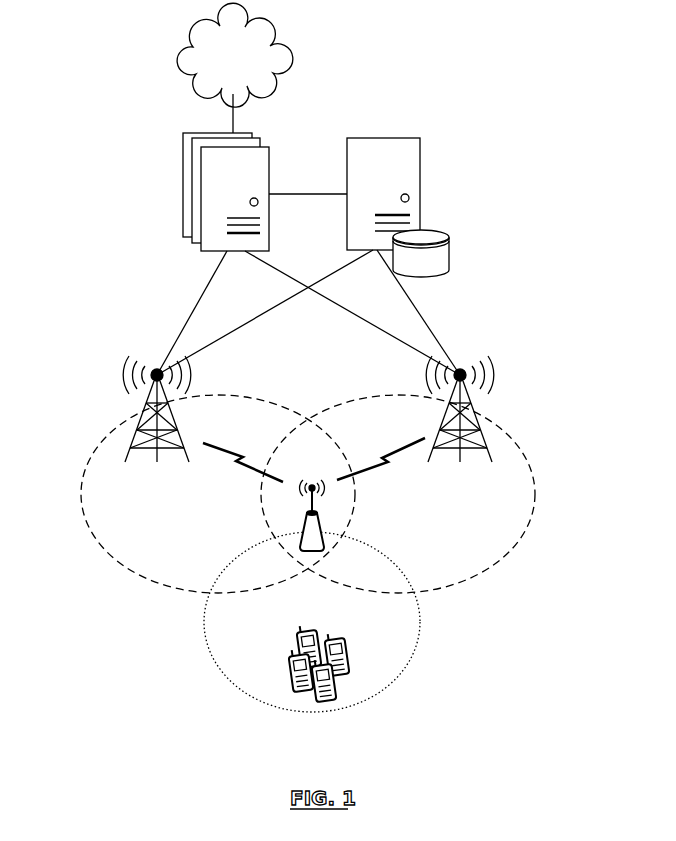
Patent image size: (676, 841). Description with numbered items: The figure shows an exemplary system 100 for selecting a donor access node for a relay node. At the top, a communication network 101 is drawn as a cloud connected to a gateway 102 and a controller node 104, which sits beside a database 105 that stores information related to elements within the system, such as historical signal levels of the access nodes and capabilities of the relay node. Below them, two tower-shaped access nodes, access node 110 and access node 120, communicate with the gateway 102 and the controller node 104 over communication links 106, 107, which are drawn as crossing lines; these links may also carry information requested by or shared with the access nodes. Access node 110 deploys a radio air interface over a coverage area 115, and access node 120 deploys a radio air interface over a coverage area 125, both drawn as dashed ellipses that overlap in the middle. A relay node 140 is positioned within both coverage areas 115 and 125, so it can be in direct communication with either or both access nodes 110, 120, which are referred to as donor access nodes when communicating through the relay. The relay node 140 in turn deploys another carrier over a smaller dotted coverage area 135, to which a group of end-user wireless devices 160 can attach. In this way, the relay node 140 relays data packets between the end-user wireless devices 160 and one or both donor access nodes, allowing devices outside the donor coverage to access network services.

The system 100 is at (366, 30).
The communication network 101 is at (249, 67).
The gateway 102 is at (184, 168).
The controller node 104 is at (420, 180).
The database 105 is at (449, 248).
The communication link 106 is at (288, 280).
The communication link 107 is at (258, 317).
The access node 110 is at (140, 438).
The coverage area 115 is at (148, 580).
The access node 120 is at (480, 440).
The coverage area 125 is at (473, 582).
The coverage area 135 is at (372, 697).
The relay node 140 is at (318, 517).
The end-user wireless devices 160 is at (266, 654).